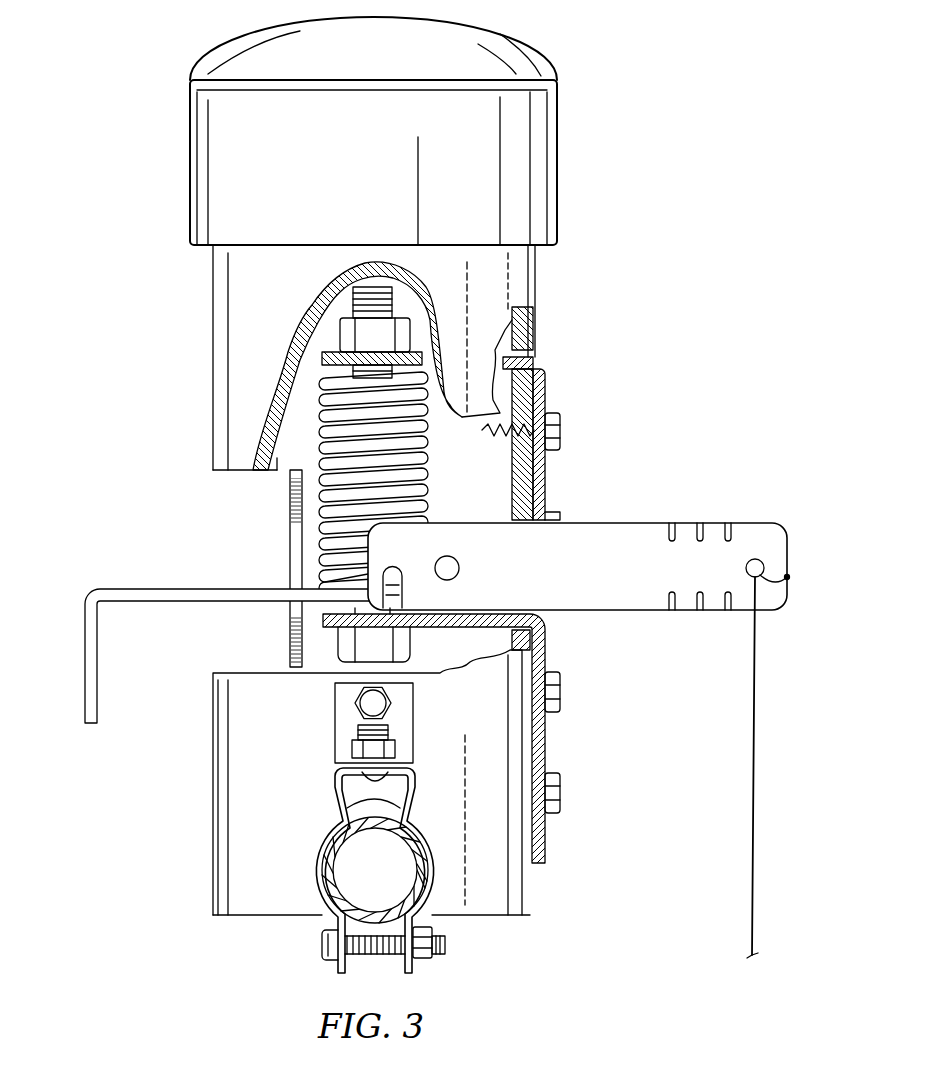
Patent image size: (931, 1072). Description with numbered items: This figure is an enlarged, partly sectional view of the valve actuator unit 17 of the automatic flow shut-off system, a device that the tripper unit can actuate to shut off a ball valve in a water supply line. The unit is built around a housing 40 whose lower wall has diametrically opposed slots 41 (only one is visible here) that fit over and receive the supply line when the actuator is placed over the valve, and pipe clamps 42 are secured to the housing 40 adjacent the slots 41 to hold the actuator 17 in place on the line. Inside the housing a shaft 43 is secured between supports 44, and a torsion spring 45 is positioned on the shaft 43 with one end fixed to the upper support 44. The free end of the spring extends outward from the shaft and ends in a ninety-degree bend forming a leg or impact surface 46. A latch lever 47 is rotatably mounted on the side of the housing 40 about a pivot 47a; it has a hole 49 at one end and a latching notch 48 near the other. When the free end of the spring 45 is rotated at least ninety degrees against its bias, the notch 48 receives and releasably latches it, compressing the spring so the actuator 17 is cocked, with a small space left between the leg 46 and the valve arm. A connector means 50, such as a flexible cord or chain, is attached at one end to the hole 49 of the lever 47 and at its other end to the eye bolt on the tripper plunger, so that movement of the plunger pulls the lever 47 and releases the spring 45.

The valve actuator unit 17 is at (730, 276).
The housing 40 is at (213, 377).
The slots 41 is at (320, 925).
The pipe clamps 42 is at (330, 797).
The shaft 43 is at (410, 645).
The supports 44 is at (545, 392).
The torsion spring 45 is at (325, 535).
The leg or impact surface 46 is at (85, 672).
The latch lever 47 is at (622, 612).
The pivot 47a is at (460, 568).
The latching notch 48 is at (397, 572).
The hole 49 is at (752, 560).
The connector means 50 is at (757, 782).